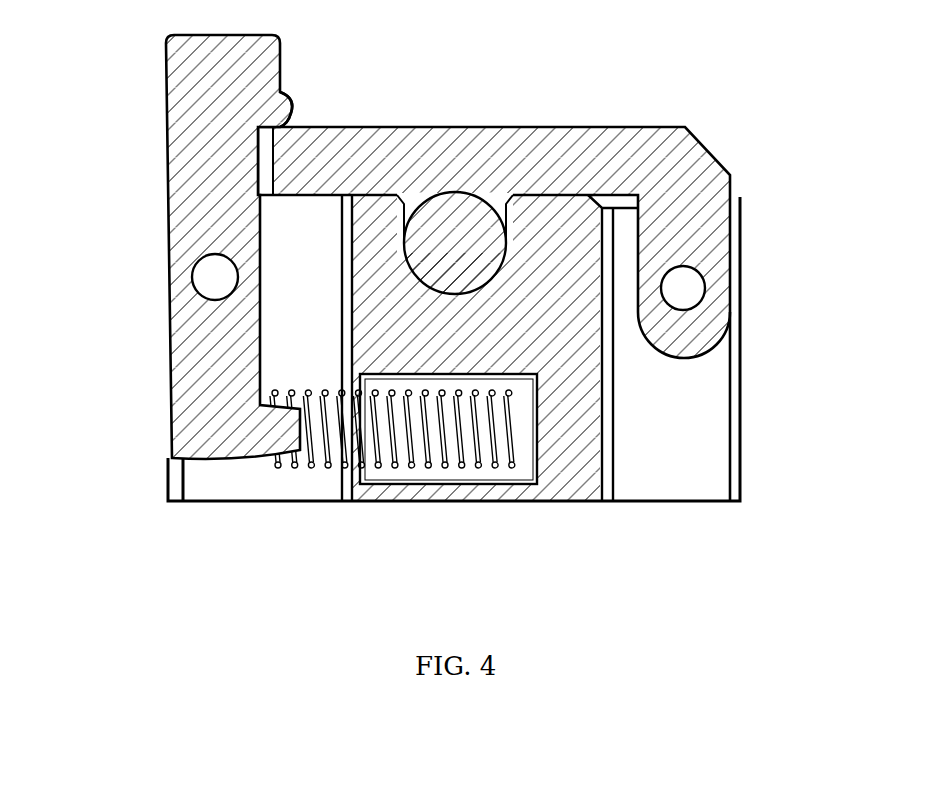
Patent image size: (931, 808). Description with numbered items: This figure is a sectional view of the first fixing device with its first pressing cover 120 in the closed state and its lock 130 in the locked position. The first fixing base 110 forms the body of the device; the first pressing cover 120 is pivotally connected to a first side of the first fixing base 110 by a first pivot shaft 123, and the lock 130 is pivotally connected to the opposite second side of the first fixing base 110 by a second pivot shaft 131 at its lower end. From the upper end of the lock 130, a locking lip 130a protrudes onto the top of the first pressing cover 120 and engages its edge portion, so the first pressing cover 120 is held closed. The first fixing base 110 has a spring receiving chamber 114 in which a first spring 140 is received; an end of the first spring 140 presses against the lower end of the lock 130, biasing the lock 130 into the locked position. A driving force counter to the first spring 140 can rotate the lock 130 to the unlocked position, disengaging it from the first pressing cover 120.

The first fixing base 110 is at (705, 428).
The spring receiving chamber 114 is at (525, 468).
The first pressing cover 120 is at (547, 150).
The first pivot shaft 123 is at (683, 288).
The lock 130 is at (182, 175).
The locking lip 130a is at (293, 110).
The second pivot shaft 131 is at (213, 279).
The first spring 140 is at (310, 462).